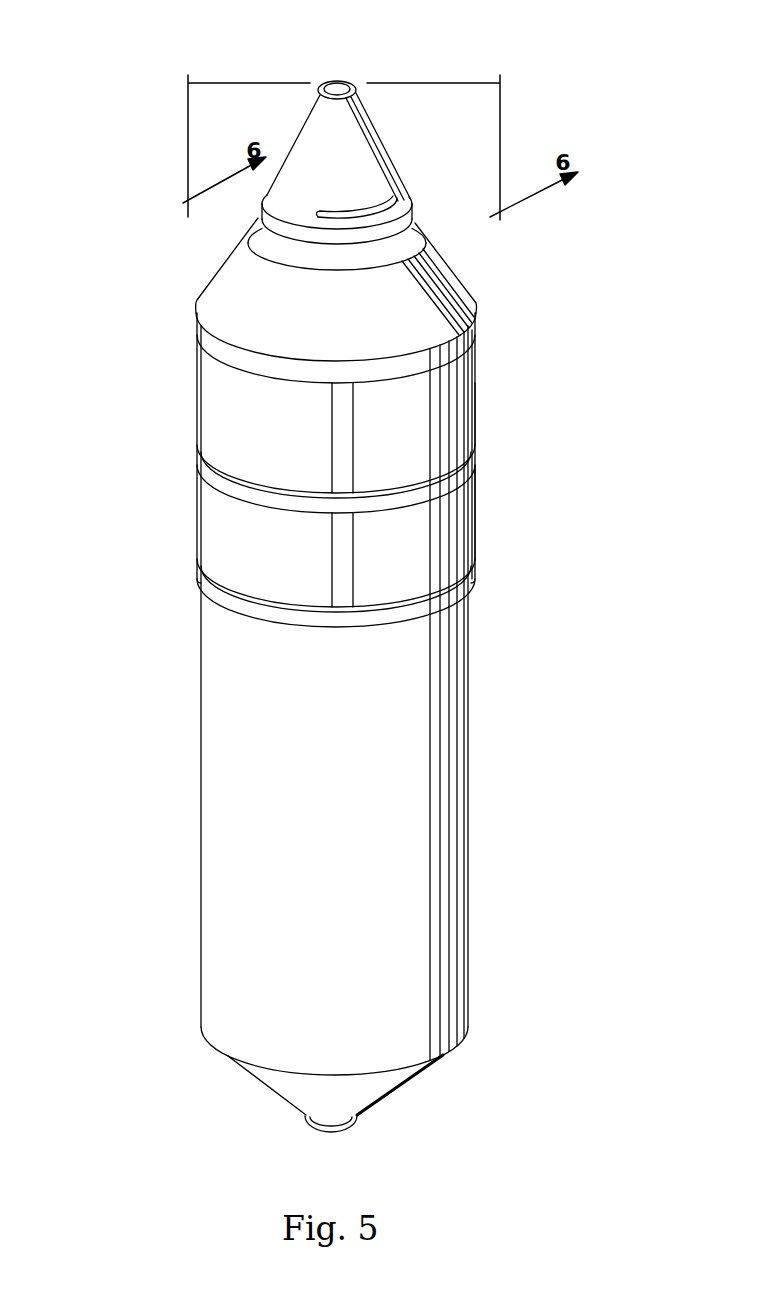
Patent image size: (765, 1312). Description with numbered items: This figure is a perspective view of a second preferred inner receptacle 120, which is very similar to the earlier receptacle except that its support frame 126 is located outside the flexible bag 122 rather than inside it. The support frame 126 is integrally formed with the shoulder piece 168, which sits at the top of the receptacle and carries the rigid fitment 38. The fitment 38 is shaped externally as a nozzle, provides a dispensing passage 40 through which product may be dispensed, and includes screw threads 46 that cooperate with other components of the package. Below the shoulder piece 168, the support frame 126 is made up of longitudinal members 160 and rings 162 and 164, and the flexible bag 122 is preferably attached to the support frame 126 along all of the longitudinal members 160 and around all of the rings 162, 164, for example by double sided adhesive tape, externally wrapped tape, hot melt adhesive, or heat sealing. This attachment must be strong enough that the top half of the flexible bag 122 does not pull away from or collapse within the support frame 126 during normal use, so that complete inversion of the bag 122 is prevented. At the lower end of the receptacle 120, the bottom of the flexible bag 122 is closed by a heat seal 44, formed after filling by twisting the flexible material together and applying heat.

The rigid fitment 38 is at (387, 155).
The dispensing passage 40 is at (352, 85).
The heat seal 44 is at (357, 1122).
The screw threads 46 is at (404, 217).
The inner receptacle 120 is at (197, 577).
The flexible bag 122 is at (455, 678).
The support frame 126 is at (478, 495).
The longitudinal members 160 is at (477, 397).
The ring 162 is at (277, 612).
The ring 164 is at (310, 510).
The shoulder piece 168 is at (417, 298).